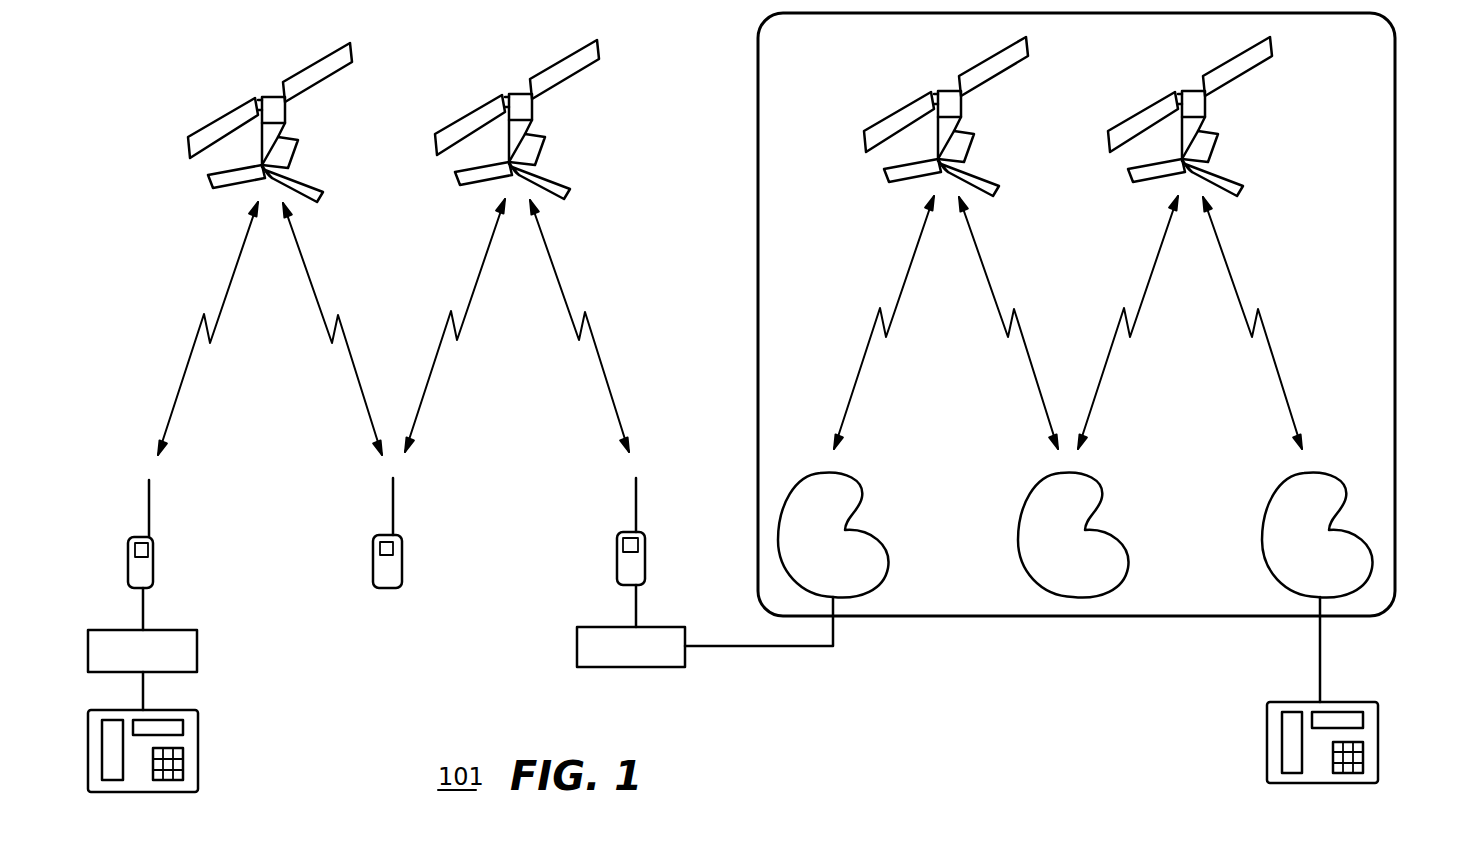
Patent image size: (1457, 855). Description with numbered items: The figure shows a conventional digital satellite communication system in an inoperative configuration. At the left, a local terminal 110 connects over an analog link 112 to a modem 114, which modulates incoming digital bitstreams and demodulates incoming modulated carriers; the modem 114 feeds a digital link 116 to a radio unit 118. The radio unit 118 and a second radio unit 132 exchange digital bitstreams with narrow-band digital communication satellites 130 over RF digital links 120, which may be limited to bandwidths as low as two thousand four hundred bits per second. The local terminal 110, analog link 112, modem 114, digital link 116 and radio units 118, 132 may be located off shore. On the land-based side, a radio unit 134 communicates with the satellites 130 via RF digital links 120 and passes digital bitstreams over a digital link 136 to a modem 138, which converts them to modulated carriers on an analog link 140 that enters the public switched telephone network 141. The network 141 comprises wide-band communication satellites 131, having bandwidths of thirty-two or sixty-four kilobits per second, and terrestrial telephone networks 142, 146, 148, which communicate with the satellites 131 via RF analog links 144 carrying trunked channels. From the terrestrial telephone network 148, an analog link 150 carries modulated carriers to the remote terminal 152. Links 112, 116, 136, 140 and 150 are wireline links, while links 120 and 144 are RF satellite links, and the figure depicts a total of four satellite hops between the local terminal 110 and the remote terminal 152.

The local terminal 110 is at (200, 757).
The analog link 112 is at (145, 695).
The modem 114 is at (198, 655).
The digital link 116 is at (145, 610).
The radio unit 118 is at (155, 570).
The RF digital links 120 is at (187, 365).
The communication satellites 130 is at (208, 123).
The communication satellites 131 is at (883, 120).
The radio unit 132 is at (403, 568).
The radio unit 134 is at (616, 565).
The digital link 136 is at (638, 605).
The modem 138 is at (576, 646).
The analog link 140 is at (752, 646).
The public switched telephone network 141 is at (757, 318).
The terrestrial telephone network 142 is at (862, 507).
The RF analog links 144 is at (864, 358).
The terrestrial telephone network 146 is at (1020, 560).
The terrestrial telephone network 148 is at (1265, 560).
The analog link 150 is at (1322, 688).
The remote terminal 152 is at (1379, 748).